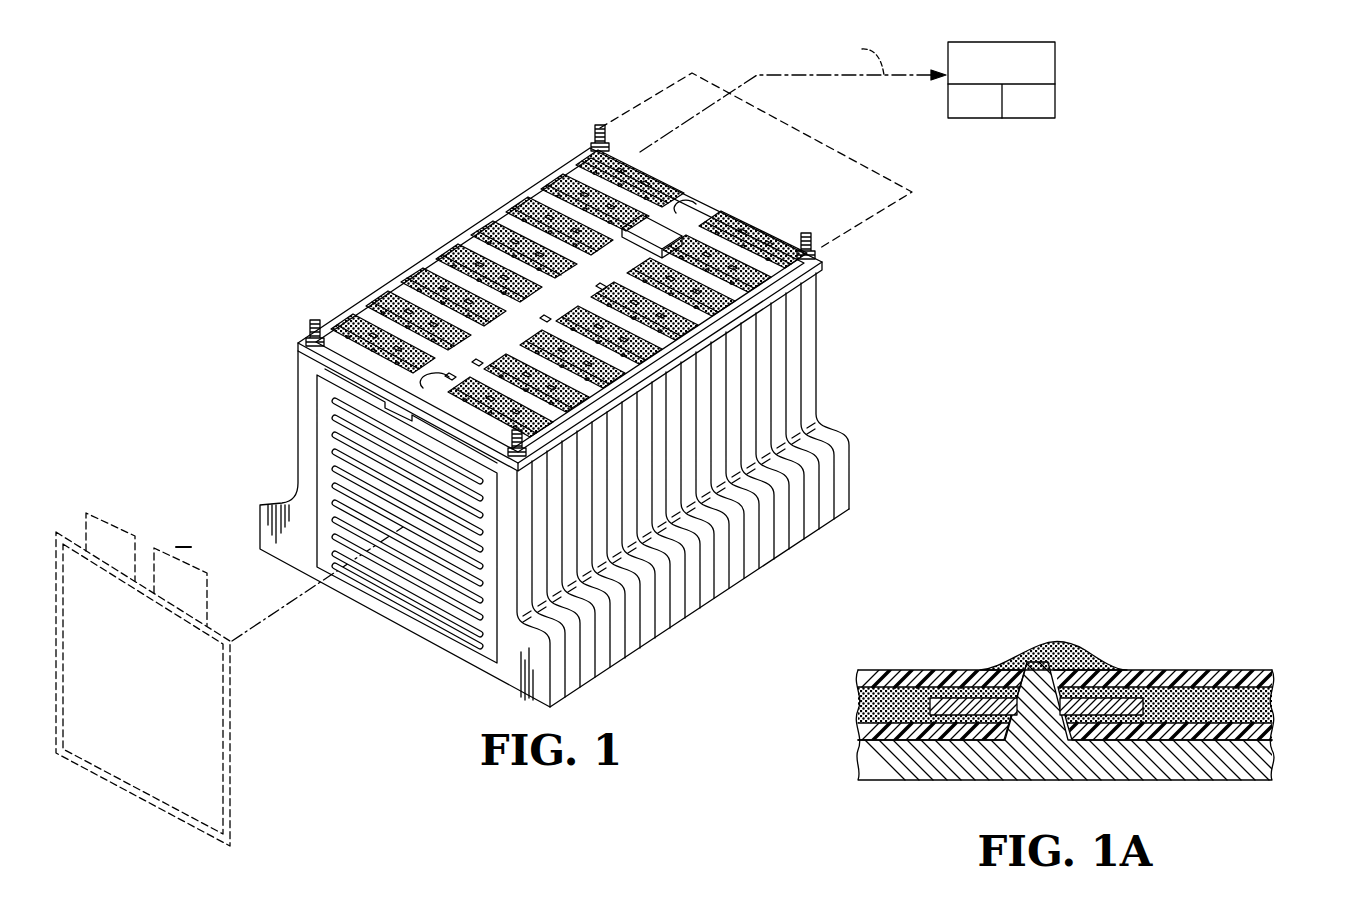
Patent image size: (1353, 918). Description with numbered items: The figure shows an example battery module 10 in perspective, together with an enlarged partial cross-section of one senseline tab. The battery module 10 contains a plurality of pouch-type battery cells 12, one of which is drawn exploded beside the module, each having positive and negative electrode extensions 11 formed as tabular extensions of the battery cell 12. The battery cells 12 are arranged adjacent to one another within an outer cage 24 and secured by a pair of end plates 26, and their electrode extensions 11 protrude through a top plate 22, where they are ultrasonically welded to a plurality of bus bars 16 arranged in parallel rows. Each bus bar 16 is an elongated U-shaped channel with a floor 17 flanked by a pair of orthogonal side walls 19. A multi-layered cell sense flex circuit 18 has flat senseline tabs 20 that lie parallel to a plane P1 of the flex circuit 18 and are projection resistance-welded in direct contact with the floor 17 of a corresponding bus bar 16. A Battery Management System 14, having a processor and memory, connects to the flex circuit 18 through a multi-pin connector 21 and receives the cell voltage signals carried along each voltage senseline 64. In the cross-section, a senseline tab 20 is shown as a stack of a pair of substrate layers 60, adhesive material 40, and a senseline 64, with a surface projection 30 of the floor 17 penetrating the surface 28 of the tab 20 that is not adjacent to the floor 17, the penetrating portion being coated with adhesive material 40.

In FIG. 1, the battery module 10 is at (376, 136).
In FIG. 1, the electrode extensions 11 is at (64, 518).
In FIG. 1, the battery cell 12 is at (150, 694).
In FIG. 1, the Battery Management System 14 is at (1056, 77).
In FIG. 1, the bus bars 16 is at (377, 303).
In FIG. 1, the floor 17 is at (755, 250).
In FIG. 1A, the floor 17 is at (1257, 760).
In FIG. 1, the cell sense flex circuit 18 is at (692, 221).
In FIG. 1, the side walls 19 is at (737, 300).
In FIG. 1, the senseline tabs 20 is at (475, 383).
In FIG. 1A, the senseline tabs 20 is at (1283, 670).
In FIG. 1, the multi-pin connector 21 is at (642, 228).
In FIG. 1, the top plate 22 is at (304, 342).
In FIG. 1, the outer cage 24 is at (788, 384).
In FIG. 1, the end plates 26 is at (403, 610).
In FIG. 1A, the surface 28 is at (1219, 660).
In FIG. 1A, the surface projection 30 is at (1037, 708).
In FIG. 1A, the adhesive material 40 is at (1080, 658).
In FIG. 1A, the substrate layers 60 is at (862, 731).
In FIG. 1A, the voltage senseline 64 is at (965, 703).
In FIG. 1, the plane of the flex circuit P1 is at (883, 213).